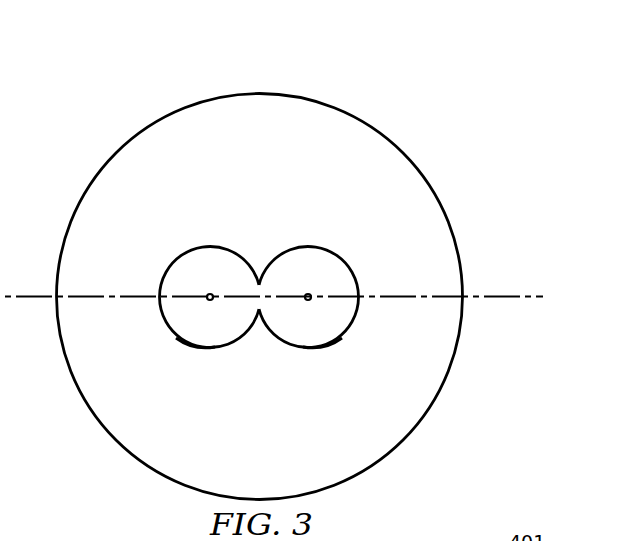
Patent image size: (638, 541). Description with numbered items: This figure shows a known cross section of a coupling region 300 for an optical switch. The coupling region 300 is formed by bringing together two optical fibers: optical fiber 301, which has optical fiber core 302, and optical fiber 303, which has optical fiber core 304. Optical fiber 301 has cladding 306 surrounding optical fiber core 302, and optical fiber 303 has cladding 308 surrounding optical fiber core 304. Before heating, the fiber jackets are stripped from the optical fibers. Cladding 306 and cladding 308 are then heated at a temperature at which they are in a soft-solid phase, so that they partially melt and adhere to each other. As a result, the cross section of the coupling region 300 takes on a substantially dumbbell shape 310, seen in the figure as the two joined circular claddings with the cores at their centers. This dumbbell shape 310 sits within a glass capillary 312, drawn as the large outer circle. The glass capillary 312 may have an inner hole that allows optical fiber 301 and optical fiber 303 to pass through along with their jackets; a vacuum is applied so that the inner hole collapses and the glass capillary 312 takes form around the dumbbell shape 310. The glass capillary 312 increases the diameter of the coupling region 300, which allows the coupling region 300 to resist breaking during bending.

The coupling region 300 is at (176, 74).
The optical fiber 301 is at (210, 243).
The optical fiber core 302 is at (206, 294).
The optical fiber 303 is at (308, 243).
The optical fiber core 304 is at (312, 294).
The cladding 306 is at (192, 329).
The cladding 308 is at (328, 329).
The dumbbell shape 310 is at (249, 375).
The glass capillary 312 is at (335, 122).